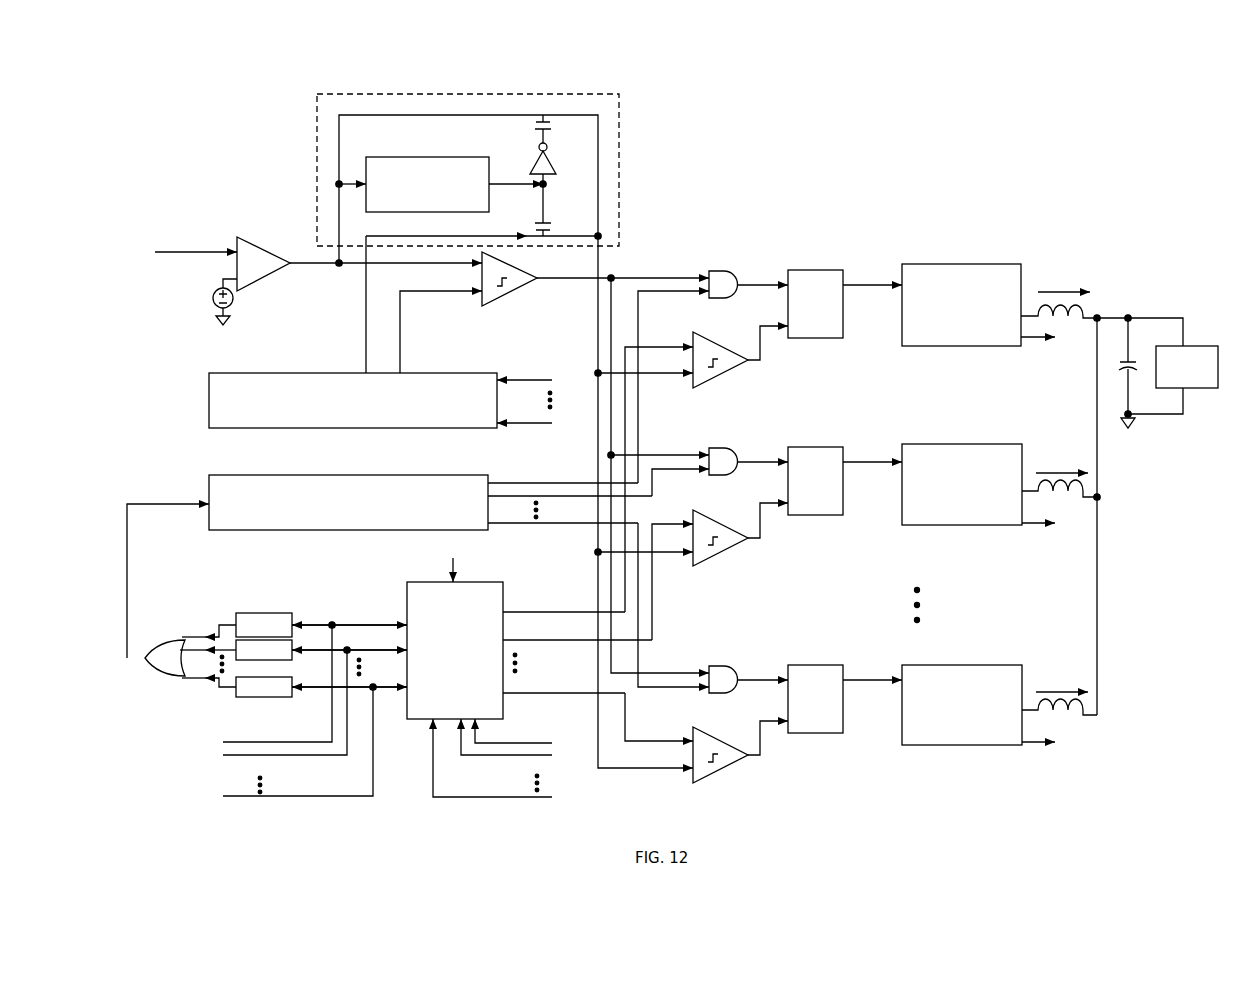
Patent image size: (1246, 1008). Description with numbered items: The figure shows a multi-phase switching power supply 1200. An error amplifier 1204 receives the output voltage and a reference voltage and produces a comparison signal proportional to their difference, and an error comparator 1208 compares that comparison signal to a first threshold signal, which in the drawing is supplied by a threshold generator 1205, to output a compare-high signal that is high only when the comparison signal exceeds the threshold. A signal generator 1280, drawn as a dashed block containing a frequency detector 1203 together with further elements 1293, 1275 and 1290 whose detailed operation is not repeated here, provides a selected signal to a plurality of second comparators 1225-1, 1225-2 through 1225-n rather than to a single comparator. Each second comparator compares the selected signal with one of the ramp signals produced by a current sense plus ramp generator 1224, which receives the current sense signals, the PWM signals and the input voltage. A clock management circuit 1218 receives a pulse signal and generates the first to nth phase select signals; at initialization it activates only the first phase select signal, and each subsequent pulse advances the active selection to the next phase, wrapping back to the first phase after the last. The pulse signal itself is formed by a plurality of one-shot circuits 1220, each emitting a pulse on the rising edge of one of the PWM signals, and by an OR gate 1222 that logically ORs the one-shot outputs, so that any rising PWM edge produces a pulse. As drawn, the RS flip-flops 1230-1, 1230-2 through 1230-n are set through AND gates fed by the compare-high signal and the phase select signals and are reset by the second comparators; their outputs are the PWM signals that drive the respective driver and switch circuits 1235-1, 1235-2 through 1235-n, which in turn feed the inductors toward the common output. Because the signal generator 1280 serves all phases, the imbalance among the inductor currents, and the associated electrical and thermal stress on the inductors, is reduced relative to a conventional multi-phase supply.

The switching power supply 1200 is at (218, 140).
The error amplifier 1204 is at (253, 238).
The frequency detector 1203 is at (432, 212).
The pull-up transistor 1293 is at (552, 122).
The inverter 1275 is at (557, 168).
The pull-down transistor 1290 is at (564, 216).
The signal generator 1280 is at (619, 208).
The error comparator 1208 is at (507, 297).
The threshold generator 1205 is at (413, 428).
The clock management circuit 1218 is at (222, 475).
The one-shot circuits 1220 is at (292, 604).
The current sense plus ramp generator 1224 is at (407, 598).
The OR gate 1222 is at (164, 674).
The second comparator 1225-1 is at (724, 372).
The RS flip-flop 1230-1 is at (802, 338).
The driver and switch circuit 1235-1 is at (942, 346).
The second comparator 1225-2 is at (724, 550).
The RS flip-flop 1230-2 is at (802, 515).
The driver and switch circuit 1235-2 is at (936, 525).
The second comparator 1225-n is at (724, 767).
The RS flip-flop 1230-n is at (804, 733).
The driver and switch circuit 1235-n is at (934, 745).